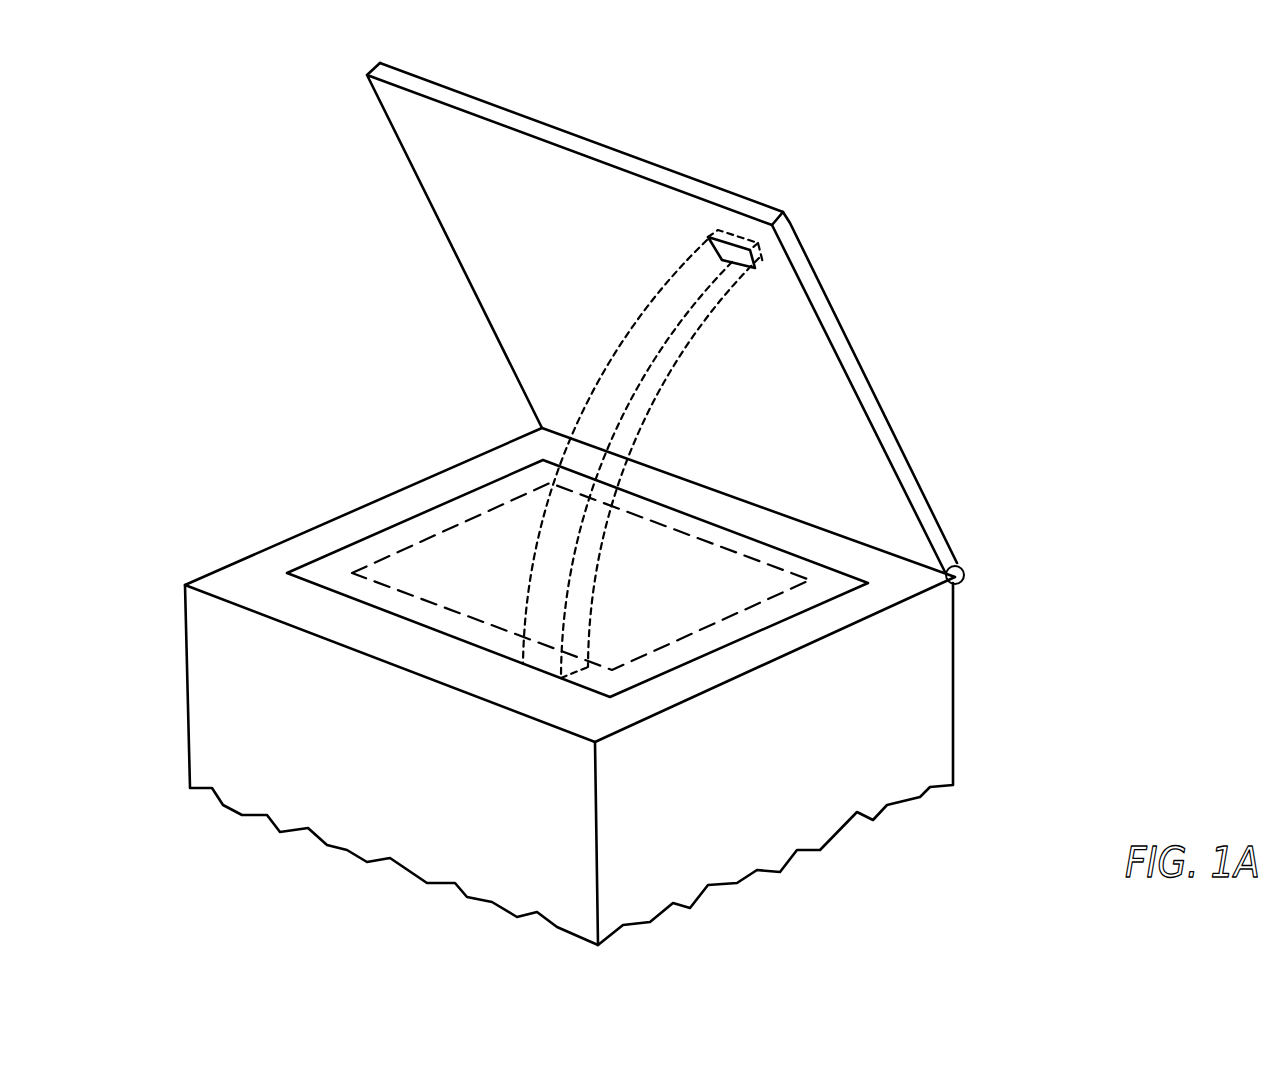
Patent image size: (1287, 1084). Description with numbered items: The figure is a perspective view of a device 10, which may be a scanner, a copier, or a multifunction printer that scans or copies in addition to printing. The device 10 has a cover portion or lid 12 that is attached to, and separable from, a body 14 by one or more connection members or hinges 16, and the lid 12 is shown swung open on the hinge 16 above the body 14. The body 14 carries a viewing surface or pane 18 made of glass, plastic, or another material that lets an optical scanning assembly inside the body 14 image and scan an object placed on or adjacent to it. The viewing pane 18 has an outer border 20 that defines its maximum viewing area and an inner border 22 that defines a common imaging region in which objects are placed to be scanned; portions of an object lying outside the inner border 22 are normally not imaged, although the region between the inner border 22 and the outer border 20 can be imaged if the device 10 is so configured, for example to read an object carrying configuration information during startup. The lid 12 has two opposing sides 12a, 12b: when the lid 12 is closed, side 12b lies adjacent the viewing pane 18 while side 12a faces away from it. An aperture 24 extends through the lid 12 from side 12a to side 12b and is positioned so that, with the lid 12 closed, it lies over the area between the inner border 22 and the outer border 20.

The device 10 is at (985, 188).
The lid 12 is at (889, 408).
The side of lid 12a is at (838, 313).
The side of lid 12b is at (867, 462).
The body 14 is at (806, 777).
The hinge 16 is at (964, 575).
The viewing pane 18 is at (442, 562).
The outer border 20 is at (545, 668).
The inner border 22 is at (456, 612).
The aperture 24 is at (760, 267).